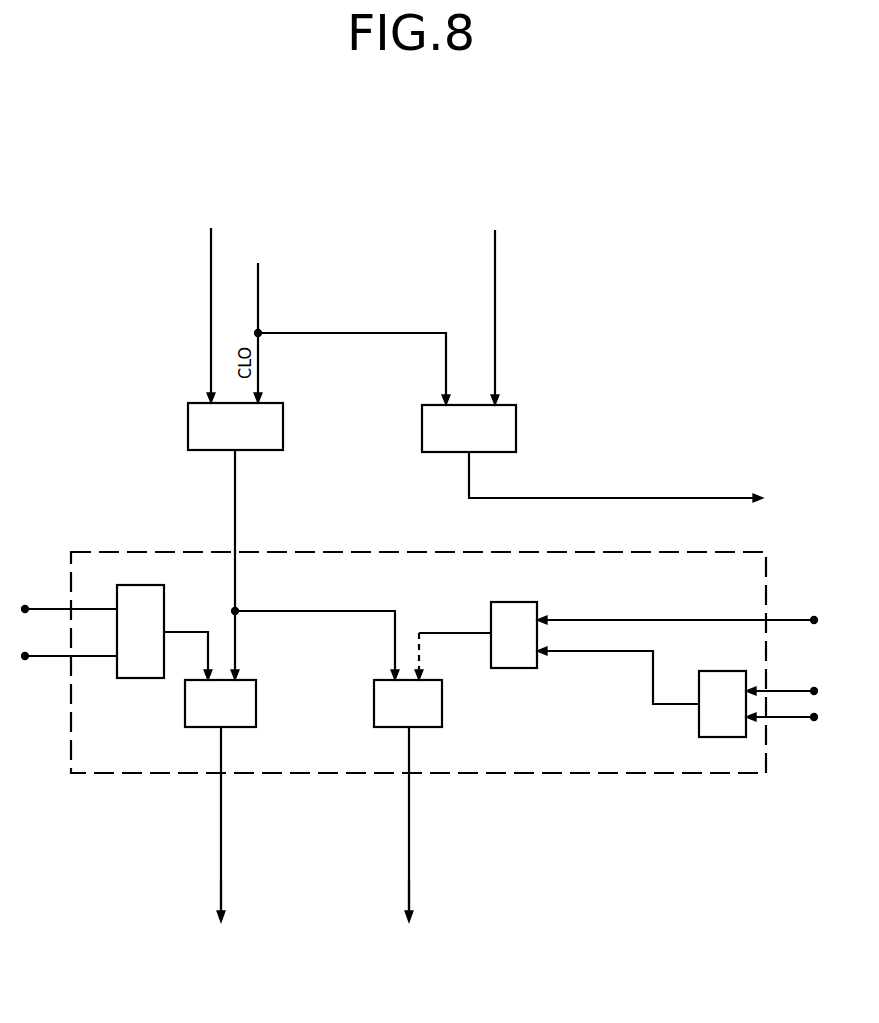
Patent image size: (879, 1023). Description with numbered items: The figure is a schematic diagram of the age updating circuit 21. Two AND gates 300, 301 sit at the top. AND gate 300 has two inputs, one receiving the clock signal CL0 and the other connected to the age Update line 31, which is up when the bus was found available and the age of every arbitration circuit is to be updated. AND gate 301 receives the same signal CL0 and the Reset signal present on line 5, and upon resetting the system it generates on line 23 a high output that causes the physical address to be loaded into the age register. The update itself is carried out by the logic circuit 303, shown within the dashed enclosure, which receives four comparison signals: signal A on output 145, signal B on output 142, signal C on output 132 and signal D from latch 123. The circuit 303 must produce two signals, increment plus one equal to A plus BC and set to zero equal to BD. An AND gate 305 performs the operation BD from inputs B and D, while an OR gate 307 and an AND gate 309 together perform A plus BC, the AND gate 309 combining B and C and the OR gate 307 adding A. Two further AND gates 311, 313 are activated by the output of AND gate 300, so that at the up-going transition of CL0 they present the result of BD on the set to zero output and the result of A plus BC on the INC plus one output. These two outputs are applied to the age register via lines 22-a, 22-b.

The AND gate 300 is at (283, 422).
The AND gate 301 is at (516, 426).
The logic circuit 303 is at (726, 498).
The AND gate 305 is at (157, 678).
The OR gate 307 is at (508, 668).
The AND gate 309 is at (745, 652).
The AND gate 311 is at (256, 700).
The AND gate 313 is at (374, 692).
The output 142 is at (419, 645).
The latch 123 is at (68, 669).
The output 145 is at (677, 610).
The output 132 is at (782, 733).
The age Update line 31 is at (201, 315).
The Reset line 5 is at (485, 317).
The line 23 is at (616, 477).
The age updating circuit 21 is at (315, 929).
The line 22-a is at (224, 824).
The line 22-b is at (400, 824).